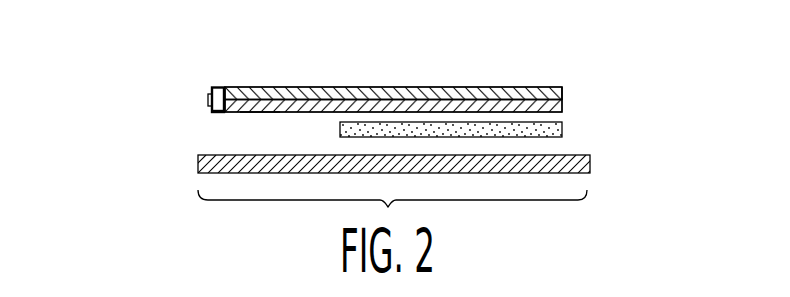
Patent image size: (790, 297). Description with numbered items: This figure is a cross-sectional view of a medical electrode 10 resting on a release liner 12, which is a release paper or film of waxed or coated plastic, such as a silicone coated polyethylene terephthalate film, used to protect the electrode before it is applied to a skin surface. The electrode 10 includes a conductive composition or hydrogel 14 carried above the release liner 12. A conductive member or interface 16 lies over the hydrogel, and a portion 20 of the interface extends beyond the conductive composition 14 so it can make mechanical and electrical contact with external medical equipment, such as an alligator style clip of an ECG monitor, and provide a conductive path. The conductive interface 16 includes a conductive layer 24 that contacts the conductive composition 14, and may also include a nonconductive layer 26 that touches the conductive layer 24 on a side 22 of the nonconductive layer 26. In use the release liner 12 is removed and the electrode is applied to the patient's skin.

The medical electrode 10 is at (573, 87).
The release liner 12 is at (198, 164).
The conductive composition 14 is at (340, 130).
The conductive interface 16 is at (208, 96).
The portion 20 is at (558, 79).
The side 22 is at (212, 110).
The conductive layer 24 is at (259, 113).
The nonconductive layer 26 is at (562, 88).